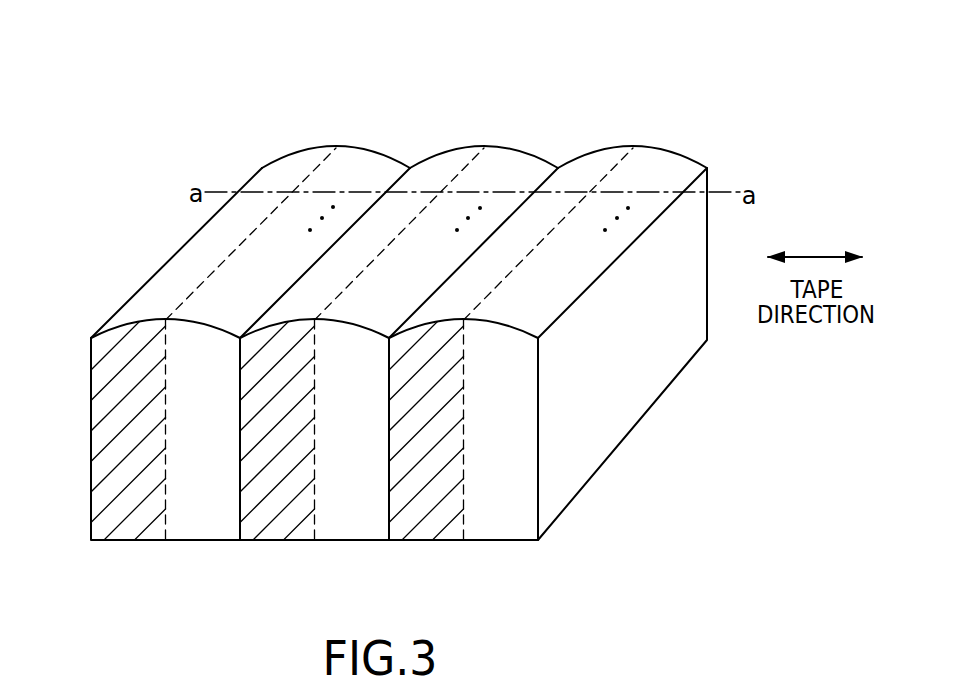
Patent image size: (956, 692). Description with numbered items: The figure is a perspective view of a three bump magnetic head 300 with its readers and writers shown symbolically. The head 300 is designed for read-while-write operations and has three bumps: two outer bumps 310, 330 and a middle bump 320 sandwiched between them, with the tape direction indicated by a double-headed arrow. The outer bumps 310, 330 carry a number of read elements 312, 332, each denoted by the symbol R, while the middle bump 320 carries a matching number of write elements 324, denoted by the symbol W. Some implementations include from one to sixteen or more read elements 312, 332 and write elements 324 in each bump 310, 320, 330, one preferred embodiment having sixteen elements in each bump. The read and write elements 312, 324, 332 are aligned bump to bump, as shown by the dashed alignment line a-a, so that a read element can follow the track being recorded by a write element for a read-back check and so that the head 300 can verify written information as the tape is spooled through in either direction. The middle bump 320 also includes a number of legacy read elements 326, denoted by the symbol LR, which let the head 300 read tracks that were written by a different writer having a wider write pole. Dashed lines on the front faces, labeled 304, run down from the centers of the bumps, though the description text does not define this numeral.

The magnetic head 300 is at (128, 215).
The data track centerlines 304 is at (165, 500).
The outer bump 310 is at (307, 141).
The read elements 312 is at (288, 240).
The middle bump 320 is at (460, 141).
The write elements 324 is at (382, 277).
The legacy read elements 326 is at (430, 268).
The outer bump 330 is at (608, 141).
The read elements 332 is at (580, 275).